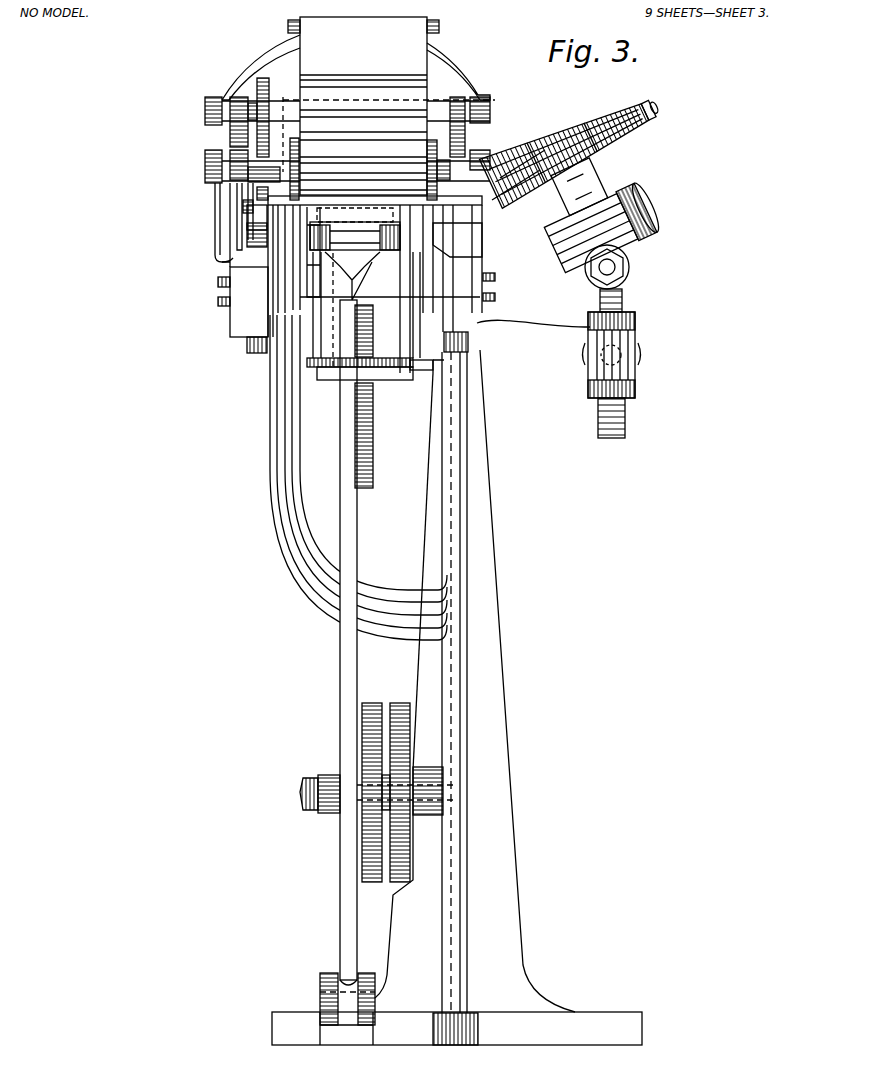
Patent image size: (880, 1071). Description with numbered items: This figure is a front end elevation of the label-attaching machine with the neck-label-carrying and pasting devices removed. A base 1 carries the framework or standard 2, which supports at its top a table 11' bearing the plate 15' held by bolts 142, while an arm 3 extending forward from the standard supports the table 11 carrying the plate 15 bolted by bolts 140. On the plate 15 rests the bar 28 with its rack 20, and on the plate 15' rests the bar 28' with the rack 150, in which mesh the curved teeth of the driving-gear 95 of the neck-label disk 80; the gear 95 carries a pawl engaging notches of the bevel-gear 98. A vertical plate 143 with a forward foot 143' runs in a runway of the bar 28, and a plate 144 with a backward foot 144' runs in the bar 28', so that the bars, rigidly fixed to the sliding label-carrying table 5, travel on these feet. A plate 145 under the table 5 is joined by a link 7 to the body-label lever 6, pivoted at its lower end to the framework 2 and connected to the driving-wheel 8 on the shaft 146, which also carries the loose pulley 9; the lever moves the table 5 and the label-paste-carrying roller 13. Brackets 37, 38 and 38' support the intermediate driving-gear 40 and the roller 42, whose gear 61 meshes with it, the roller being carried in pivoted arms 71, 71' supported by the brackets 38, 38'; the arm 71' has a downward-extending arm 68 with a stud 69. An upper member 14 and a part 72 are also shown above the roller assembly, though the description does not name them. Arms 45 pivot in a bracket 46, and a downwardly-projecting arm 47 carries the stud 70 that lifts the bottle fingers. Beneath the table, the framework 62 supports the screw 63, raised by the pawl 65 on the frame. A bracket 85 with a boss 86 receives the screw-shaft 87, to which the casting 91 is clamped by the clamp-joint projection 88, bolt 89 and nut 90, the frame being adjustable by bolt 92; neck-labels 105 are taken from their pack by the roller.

The base 1 is at (572, 1015).
The standard 2 is at (510, 872).
The arm 3 is at (310, 565).
The label-carrying table 5 is at (362, 200).
The body-label lever 6 is at (340, 678).
The link 7 is at (283, 352).
The driving-wheel 8 is at (373, 881).
The loose pulley 9 is at (392, 707).
The table 11 is at (236, 342).
The table 11' is at (504, 375).
The label-paste-carrying roller 13 is at (478, 170).
The roller 14 is at (356, 32).
The plate 15 is at (229, 280).
The plate 15' is at (480, 268).
The rack 20 is at (255, 217).
The bar 28 is at (168, 225).
The bar 28' is at (461, 289).
The bracket 37 is at (217, 134).
The bracket 38 is at (215, 302).
The bracket 38' is at (521, 196).
The intermediate driving-gear 40 is at (258, 137).
The roller 42 is at (313, 80).
The arm 45 is at (265, 192).
The bracket 46 is at (233, 260).
The downwardly-projecting arm 47 is at (240, 226).
The gear 61 is at (256, 100).
The framework 62 is at (318, 367).
The screw 63 is at (358, 477).
The pawl 65 is at (320, 378).
The downward-extending arm 68 is at (300, 200).
The stud 69 is at (215, 225).
The stud 70 is at (232, 242).
The arm 71 is at (210, 163).
The arm 71' is at (498, 112).
The block 72 is at (470, 140).
The neck-label disk 80 is at (642, 102).
The bracket 85 is at (643, 200).
The boss 86 is at (636, 385).
The screw-shaft 87 is at (626, 414).
The clamp-joint projection 88 is at (628, 263).
The bolt 89 is at (615, 268).
The nut 90 is at (622, 278).
The casting 91 is at (652, 212).
The bolt 92 is at (648, 222).
The driving-gear 95 is at (652, 108).
The bevel-gear 98 is at (637, 142).
The labels 105 is at (612, 192).
The bolt 140 is at (290, 325).
The bolt 142 is at (450, 393).
The vertical plate 143 is at (216, 292).
The foot 143' is at (198, 271).
The plate 144 is at (518, 303).
The foot 144' is at (517, 280).
The plate 145 is at (370, 213).
The shaft 146 is at (303, 790).
The rack 150 is at (540, 145).